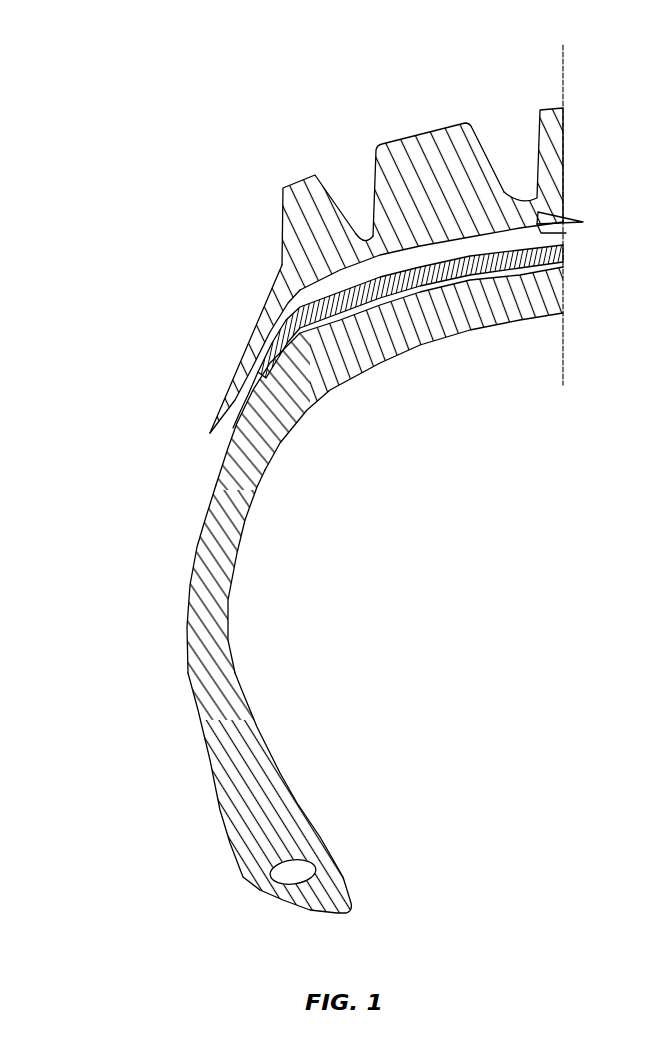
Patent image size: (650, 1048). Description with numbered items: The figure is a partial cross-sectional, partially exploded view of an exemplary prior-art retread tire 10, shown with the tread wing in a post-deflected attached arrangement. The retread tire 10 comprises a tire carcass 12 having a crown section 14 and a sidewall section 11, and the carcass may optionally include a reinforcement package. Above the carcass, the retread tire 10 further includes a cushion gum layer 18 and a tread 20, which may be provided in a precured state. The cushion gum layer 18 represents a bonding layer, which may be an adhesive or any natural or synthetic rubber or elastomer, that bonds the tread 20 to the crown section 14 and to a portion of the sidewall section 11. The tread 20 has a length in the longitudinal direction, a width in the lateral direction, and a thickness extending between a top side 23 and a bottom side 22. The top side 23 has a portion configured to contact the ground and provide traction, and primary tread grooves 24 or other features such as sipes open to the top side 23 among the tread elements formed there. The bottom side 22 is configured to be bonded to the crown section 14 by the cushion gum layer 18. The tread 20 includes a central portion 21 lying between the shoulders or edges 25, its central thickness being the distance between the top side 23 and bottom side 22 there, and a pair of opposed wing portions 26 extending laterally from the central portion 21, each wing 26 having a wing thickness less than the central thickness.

The retread tire 10 is at (126, 68).
The sidewall section 11 is at (192, 682).
The tire carcass 12 is at (188, 563).
The crown section 14 is at (433, 337).
The cushion gum layer 18 is at (563, 247).
The tread 20 is at (194, 212).
The central portion 21 is at (462, 94).
The bottom side 22 is at (583, 223).
The top side 23 is at (422, 130).
The primary tread grooves 24 is at (348, 185).
The shoulders 25 is at (281, 232).
The wing portions 26 is at (233, 388).